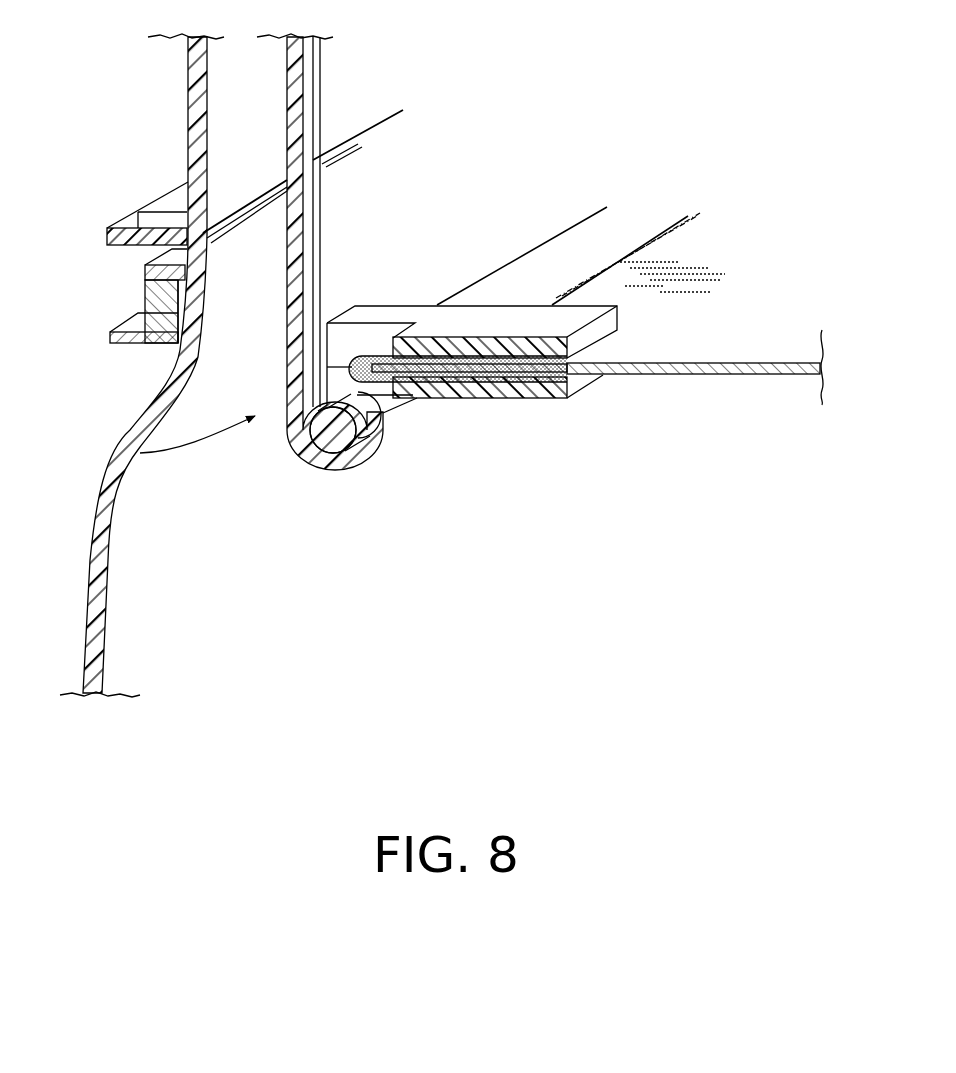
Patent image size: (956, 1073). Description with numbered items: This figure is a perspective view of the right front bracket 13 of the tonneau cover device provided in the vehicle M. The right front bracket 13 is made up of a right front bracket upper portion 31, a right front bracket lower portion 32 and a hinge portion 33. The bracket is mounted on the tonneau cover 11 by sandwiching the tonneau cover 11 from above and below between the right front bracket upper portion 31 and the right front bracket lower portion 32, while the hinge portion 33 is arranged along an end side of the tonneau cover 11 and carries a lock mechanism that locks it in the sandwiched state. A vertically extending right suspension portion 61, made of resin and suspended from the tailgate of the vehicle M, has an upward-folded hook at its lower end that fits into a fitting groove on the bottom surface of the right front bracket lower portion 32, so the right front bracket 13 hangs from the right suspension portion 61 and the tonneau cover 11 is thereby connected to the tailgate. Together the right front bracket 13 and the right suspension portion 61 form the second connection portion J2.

The vehicle M is at (108, 573).
The second connection portion J2 is at (120, 450).
The right suspension portion 61 is at (288, 246).
The hinge portion 33 is at (422, 378).
The right front bracket 13 is at (428, 310).
The right front bracket upper portion 31 is at (467, 337).
The right front bracket lower portion 32 is at (487, 398).
The tonneau cover 11 is at (763, 362).